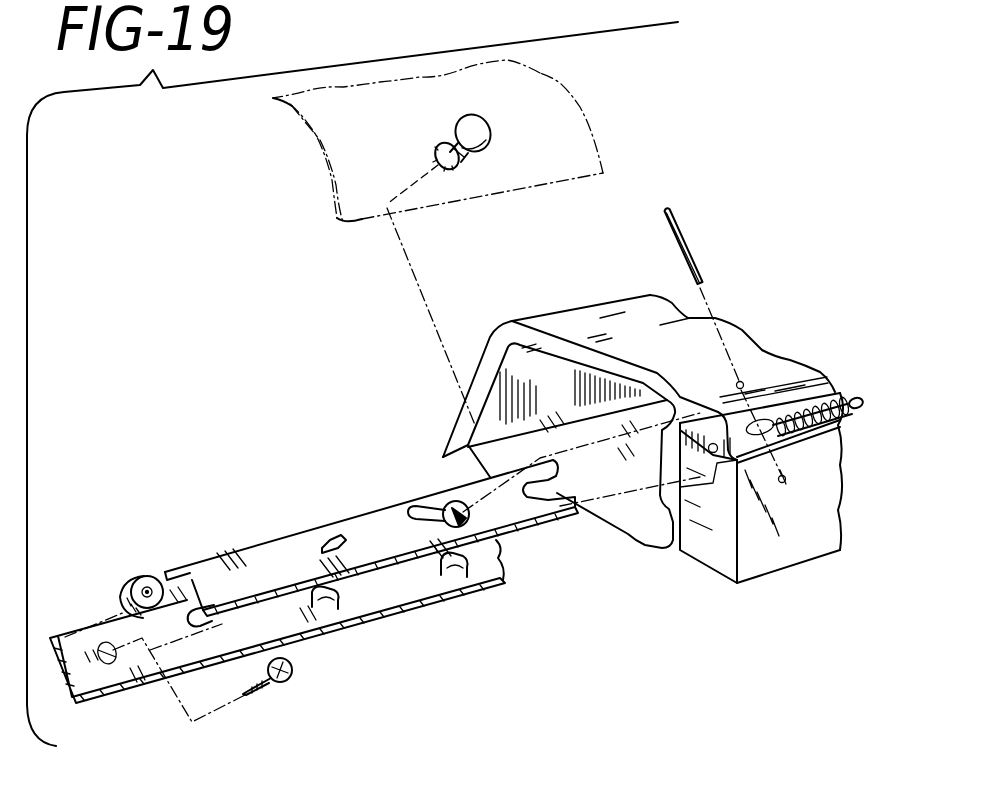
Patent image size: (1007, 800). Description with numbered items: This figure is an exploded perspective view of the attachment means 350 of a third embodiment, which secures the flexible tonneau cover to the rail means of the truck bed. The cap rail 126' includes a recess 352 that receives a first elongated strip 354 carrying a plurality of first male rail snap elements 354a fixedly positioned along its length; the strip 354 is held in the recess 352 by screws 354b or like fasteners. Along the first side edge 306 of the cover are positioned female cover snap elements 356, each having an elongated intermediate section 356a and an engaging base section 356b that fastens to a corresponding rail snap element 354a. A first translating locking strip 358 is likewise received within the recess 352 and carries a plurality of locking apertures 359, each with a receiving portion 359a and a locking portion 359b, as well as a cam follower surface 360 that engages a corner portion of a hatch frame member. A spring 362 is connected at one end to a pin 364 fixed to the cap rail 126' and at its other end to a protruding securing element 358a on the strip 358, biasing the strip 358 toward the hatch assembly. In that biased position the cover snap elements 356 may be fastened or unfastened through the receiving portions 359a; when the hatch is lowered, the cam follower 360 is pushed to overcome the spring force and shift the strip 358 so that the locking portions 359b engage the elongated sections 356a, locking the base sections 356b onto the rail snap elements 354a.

The first side edge 306 is at (578, 102).
The female cover snap element 356 is at (480, 124).
The elongated intermediate section 356a is at (467, 158).
The engaging base section 356b is at (450, 168).
The pin 364 is at (687, 243).
The spring 362 is at (852, 402).
The recess 352 is at (673, 541).
The cap rail 126' is at (721, 460).
The first translating locking strip 358 is at (268, 550).
The protruding securing element 358a is at (333, 533).
The locking aperture 359 is at (472, 519).
The receiving portion 359a is at (452, 508).
The locking portion 359b is at (424, 514).
The cam follower surface 360 is at (146, 576).
The first elongated strip 354 is at (140, 670).
The first male rail snap element 354a is at (441, 568).
The screw 354b is at (297, 677).
The attachment means 350 is at (497, 648).